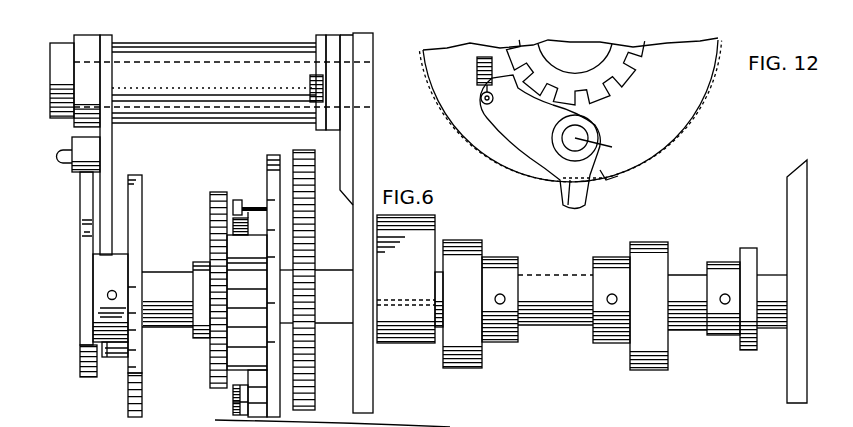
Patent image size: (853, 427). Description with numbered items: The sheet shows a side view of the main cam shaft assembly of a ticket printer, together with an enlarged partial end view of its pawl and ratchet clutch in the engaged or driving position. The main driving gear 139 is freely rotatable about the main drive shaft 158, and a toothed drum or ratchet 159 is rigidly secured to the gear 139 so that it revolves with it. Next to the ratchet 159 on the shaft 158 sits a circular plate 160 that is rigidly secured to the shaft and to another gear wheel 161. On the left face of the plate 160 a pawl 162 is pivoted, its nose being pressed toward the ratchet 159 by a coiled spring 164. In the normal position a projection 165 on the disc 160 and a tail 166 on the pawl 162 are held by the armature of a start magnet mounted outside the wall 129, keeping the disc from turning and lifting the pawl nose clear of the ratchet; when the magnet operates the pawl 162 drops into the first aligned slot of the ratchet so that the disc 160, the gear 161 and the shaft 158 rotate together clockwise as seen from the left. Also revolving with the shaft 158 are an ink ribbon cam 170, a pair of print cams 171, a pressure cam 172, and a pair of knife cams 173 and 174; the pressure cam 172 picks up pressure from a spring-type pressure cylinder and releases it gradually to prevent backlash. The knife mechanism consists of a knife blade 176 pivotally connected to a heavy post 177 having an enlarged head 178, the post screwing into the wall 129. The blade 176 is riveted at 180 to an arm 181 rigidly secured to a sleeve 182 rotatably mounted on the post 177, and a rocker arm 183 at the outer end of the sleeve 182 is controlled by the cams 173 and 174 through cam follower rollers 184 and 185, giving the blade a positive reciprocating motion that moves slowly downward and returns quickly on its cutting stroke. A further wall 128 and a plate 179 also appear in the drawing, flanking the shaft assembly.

In FIG. 6, the side plate 128 is at (800, 359).
In FIG. 6, the wall 129 is at (363, 157).
In FIG. 6, the main driving gear 139 is at (211, 206).
In FIG. 6, the main drive shaft 158 is at (338, 318).
In FIG. 6, the ratchet 159 is at (233, 247).
In FIG. 12, the ratchet 159 is at (606, 92).
In FIG. 6, the circular plate 160 is at (271, 165).
In FIG. 12, the circular plate 160 is at (668, 120).
In FIG. 6, the gear wheel 161 is at (308, 259).
In FIG. 12, the gear wheel 161 is at (712, 91).
In FIG. 6, the pawl 162 is at (233, 400).
In FIG. 12, the pawl 162 is at (520, 119).
In FIG. 6, the coiled spring 164 is at (250, 218).
In FIG. 12, the coiled spring 164 is at (477, 70).
In FIG. 12, the projection 165 is at (601, 172).
In FIG. 12, the tail 166 is at (563, 190).
In FIG. 6, the ink ribbon cam 170 is at (750, 348).
In FIG. 6, the print cams 171 is at (478, 376).
In FIG. 6, the pressure cam 172 is at (428, 348).
In FIG. 6, the knife cam 173 is at (136, 224).
In FIG. 6, the knife cam 174 is at (83, 291).
In FIG. 6, the knife blade 176 is at (334, 120).
In FIG. 6, the post 177 is at (160, 117).
In FIG. 6, the enlarged head 178 is at (60, 118).
In FIG. 6, the bracket plate 179 is at (352, 126).
In FIG. 6, the rivet 180 is at (312, 86).
In FIG. 6, the arm 181 is at (318, 129).
In FIG. 6, the sleeve 182 is at (217, 120).
In FIG. 6, the rocker arm 183 is at (100, 239).
In FIG. 6, the cam follower roller 184 is at (118, 395).
In FIG. 6, the cam follower roller 185 is at (72, 172).